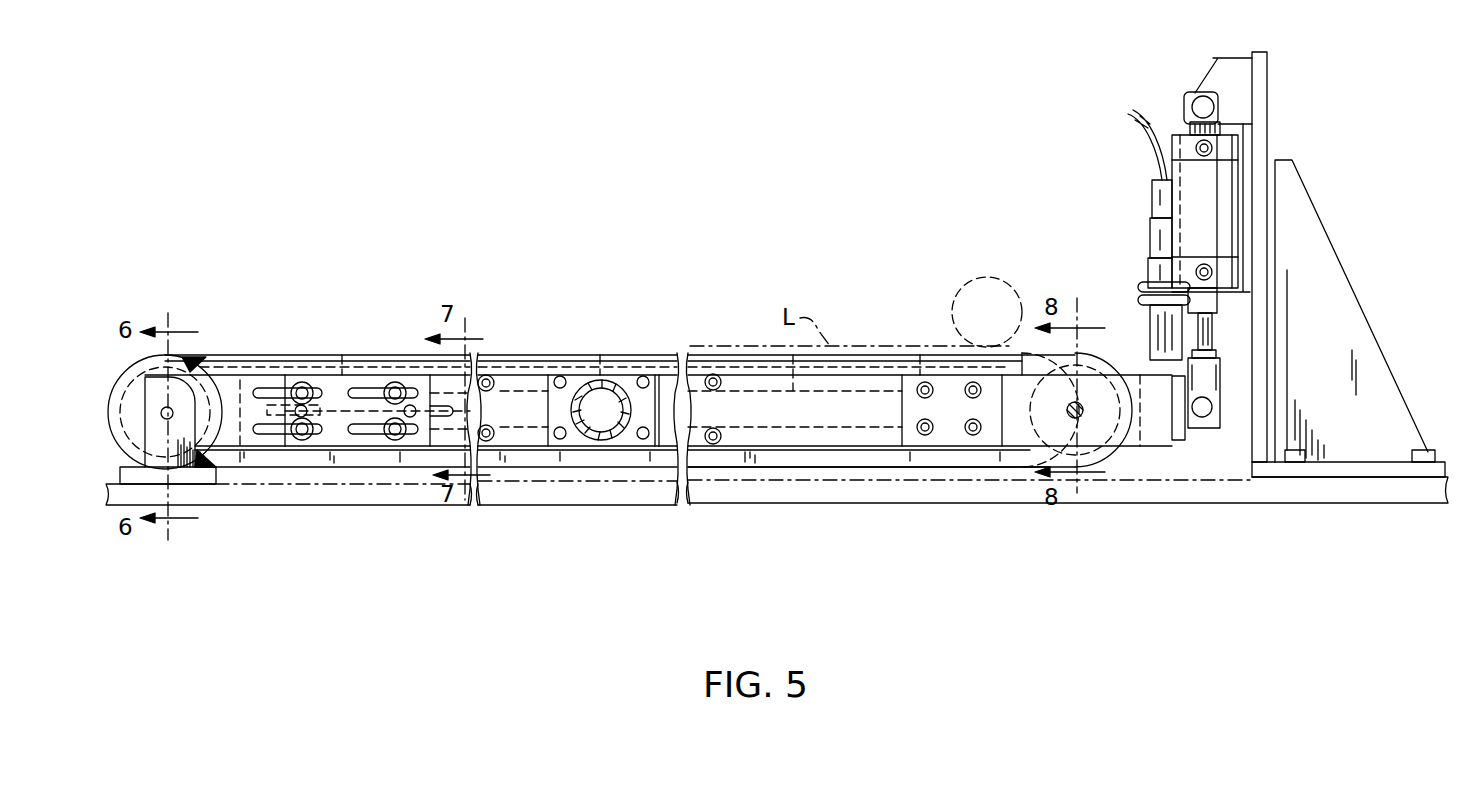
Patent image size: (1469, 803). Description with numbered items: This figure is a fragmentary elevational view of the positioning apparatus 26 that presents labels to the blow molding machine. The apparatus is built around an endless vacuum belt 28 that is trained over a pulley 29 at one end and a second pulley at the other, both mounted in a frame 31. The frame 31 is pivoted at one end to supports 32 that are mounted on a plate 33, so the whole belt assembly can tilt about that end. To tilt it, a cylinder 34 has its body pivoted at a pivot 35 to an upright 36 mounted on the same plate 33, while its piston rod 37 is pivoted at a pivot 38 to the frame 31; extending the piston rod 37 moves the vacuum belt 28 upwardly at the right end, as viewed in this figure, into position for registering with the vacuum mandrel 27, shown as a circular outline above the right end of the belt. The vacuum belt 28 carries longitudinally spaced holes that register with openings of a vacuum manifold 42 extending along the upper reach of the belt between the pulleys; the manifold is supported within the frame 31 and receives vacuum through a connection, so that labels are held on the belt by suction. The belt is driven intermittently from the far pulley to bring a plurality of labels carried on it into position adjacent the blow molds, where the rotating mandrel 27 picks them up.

The positioning apparatus 26 is at (652, 340).
The vacuum mandrel 27 is at (993, 290).
The endless vacuum belt 28 is at (280, 357).
The pulley 29 is at (122, 393).
The frame 31 is at (845, 455).
The support 32 is at (190, 405).
The plate 33 is at (222, 497).
The cylinder 34 is at (1210, 190).
The pivot of cylinder body 35 is at (1193, 103).
The upright 36 is at (1312, 255).
The piston rod 37 is at (1215, 332).
The pivot of piston rod 38 is at (1202, 415).
The vacuum manifold 42 is at (597, 440).